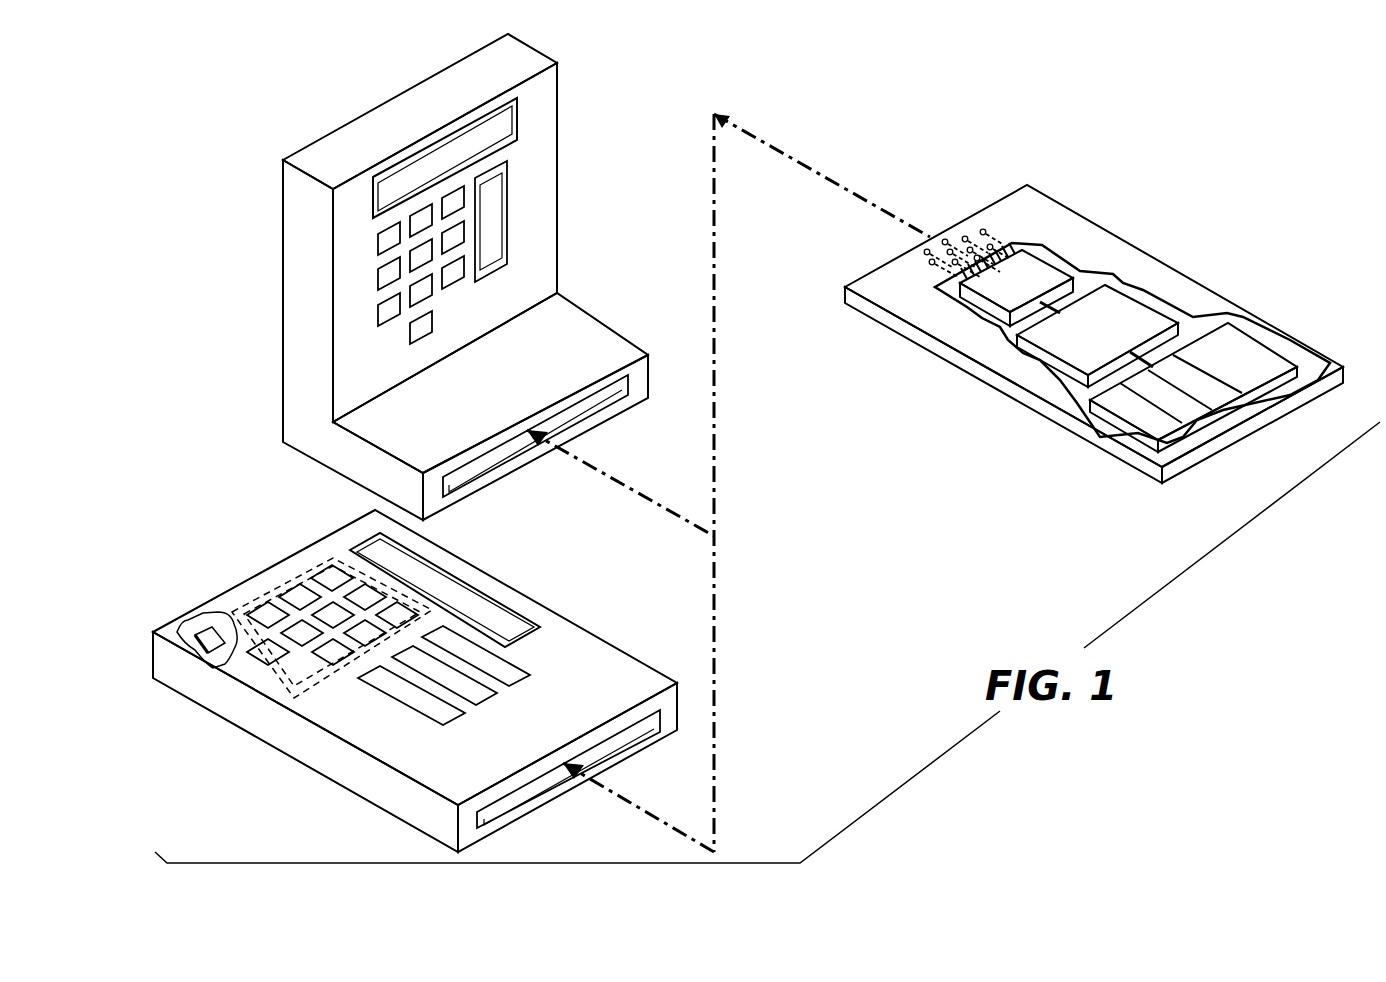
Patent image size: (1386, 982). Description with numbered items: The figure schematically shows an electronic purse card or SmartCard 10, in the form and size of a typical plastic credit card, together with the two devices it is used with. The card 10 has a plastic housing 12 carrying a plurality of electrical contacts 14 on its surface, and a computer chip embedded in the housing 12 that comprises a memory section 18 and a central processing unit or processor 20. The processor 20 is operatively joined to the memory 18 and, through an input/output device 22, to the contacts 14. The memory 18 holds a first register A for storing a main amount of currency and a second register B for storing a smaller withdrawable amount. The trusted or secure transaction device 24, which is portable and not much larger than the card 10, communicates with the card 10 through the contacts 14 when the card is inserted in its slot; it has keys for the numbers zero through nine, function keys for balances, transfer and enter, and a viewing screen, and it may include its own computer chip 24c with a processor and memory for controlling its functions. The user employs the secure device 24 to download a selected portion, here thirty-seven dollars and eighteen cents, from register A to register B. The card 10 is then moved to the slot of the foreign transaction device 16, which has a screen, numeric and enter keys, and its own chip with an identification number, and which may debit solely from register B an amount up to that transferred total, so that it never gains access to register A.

The electronic purse card 10 is at (1098, 319).
The housing 12 is at (1227, 293).
The electrical contacts 14 is at (945, 240).
The foreign transaction device 16 is at (562, 194).
The memory section 18 is at (1275, 342).
The central processing unit 20 is at (1137, 313).
The input/output device 22 is at (1038, 273).
The secure transaction device 24 is at (406, 671).
The computer chip 24c is at (218, 637).